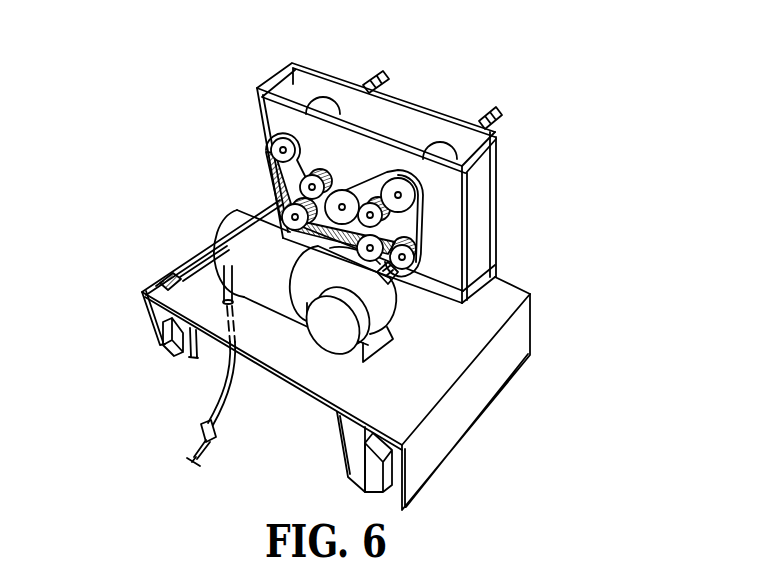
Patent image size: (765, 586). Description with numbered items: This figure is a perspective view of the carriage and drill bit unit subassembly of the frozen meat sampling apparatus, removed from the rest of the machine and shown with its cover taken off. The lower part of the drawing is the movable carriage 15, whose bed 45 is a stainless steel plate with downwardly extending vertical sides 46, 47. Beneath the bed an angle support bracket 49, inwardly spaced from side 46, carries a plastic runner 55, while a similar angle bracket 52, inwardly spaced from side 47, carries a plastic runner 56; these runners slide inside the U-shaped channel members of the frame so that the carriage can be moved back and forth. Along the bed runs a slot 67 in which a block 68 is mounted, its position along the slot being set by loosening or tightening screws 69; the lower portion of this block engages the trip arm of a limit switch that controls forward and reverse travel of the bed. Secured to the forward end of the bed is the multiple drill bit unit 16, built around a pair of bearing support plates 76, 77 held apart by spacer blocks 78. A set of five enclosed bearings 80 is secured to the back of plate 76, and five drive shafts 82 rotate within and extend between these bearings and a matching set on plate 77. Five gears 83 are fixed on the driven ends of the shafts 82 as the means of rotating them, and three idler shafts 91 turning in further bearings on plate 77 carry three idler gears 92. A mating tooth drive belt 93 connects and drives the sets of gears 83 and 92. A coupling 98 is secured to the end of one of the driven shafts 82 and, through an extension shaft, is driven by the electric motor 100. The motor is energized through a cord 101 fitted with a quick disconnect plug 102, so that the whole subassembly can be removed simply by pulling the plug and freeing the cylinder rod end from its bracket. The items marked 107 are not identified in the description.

The movable carriage 15 is at (198, 213).
The multiple drill bit unit 16 is at (250, 110).
The bed 45 is at (510, 294).
The vertical side 46 is at (152, 307).
The vertical side 47 is at (525, 336).
The angle support bracket 49 is at (191, 356).
The angle bracket 52 is at (340, 426).
The plastic runner 55 is at (165, 339).
The plastic runner 56 is at (374, 484).
The slot 67 is at (195, 251).
The block 68 is at (160, 282).
The screws 69 is at (167, 273).
The bearing support plate 76 is at (495, 189).
The bearing support plate 77 is at (450, 226).
The spacer blocks 78 is at (273, 83).
The enclosed bearings 80 is at (322, 101).
The drive shafts 82 is at (280, 148).
The gears 83 is at (276, 162).
The idler shafts 91 is at (342, 250).
The idler gears 92 is at (322, 170).
The mating tooth drive belt 93 is at (273, 186).
The coupling 98 is at (390, 284).
The electric motor 100 is at (332, 344).
The cord 101 is at (228, 378).
The quick disconnect plug 102 is at (200, 428).
The bolt 107 is at (381, 77).